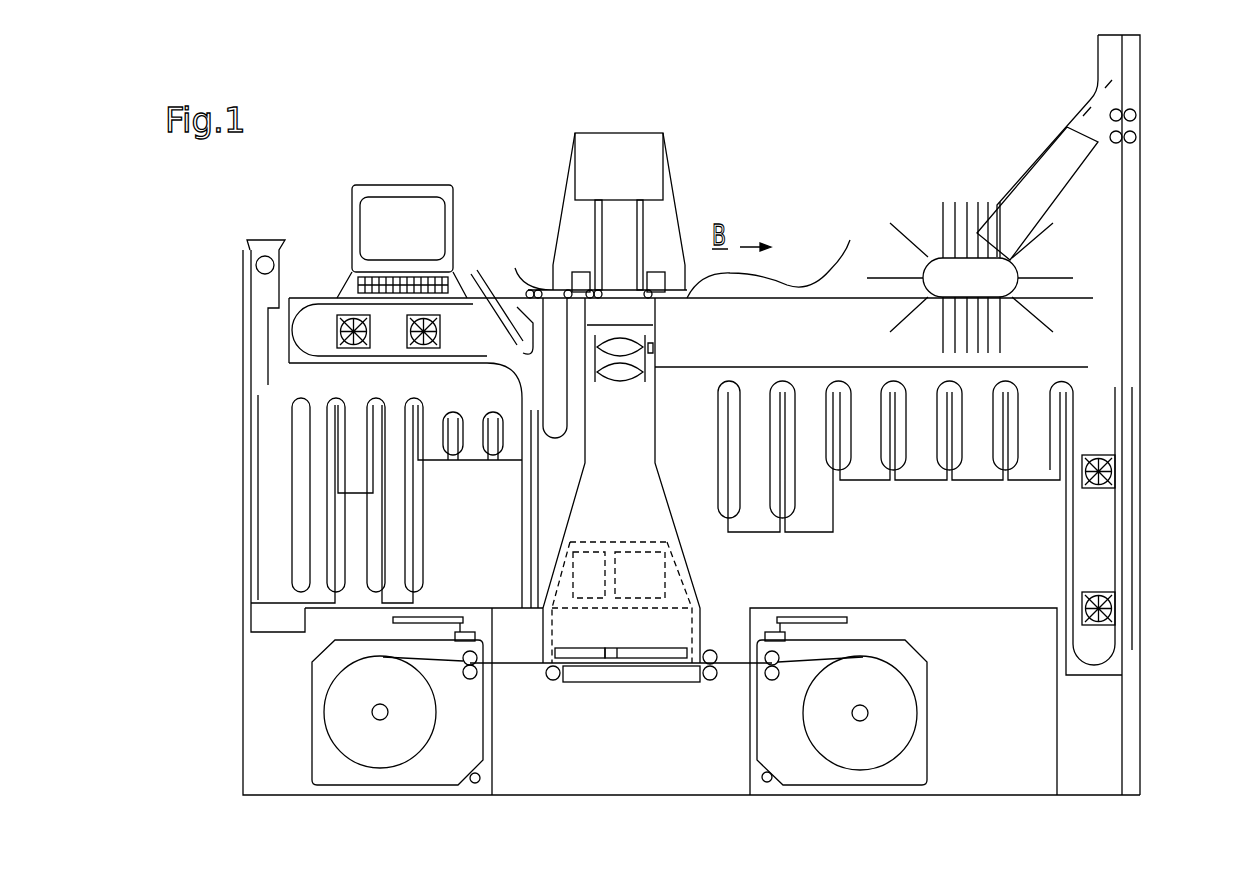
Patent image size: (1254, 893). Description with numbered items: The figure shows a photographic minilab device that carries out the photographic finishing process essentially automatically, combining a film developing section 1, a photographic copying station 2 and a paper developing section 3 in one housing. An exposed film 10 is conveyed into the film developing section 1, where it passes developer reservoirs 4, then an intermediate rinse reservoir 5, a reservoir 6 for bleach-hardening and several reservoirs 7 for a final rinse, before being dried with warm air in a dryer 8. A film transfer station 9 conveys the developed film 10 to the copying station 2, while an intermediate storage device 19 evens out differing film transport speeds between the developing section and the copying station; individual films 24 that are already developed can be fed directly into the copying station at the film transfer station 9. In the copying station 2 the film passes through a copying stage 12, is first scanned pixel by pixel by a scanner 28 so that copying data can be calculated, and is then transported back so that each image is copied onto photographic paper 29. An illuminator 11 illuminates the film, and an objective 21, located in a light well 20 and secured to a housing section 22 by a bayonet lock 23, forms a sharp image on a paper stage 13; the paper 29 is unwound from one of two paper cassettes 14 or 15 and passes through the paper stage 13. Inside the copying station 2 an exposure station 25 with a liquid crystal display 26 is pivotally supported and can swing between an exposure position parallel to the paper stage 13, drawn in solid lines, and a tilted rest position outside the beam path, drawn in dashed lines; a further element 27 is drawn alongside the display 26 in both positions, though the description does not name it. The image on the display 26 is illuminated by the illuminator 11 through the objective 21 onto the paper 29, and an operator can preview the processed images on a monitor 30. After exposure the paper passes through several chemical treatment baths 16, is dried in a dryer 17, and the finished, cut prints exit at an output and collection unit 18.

The film developing section 1 is at (238, 505).
The photographic copying station 2 is at (618, 798).
The paper developing section 3 is at (1150, 437).
The developer reservoirs 4 is at (297, 603).
The intermediate rinse reservoir 5 is at (358, 490).
The bleach-hardening reservoir 6 is at (405, 565).
The final rinse reservoirs 7 is at (530, 463).
The dryer 8 is at (335, 313).
The film transfer station 9 is at (495, 269).
The exposed film 10 is at (285, 396).
The illuminator 11 is at (657, 140).
The copying stage 12 is at (618, 300).
The paper stage 13 is at (625, 677).
The paper cassette 14 is at (415, 780).
The paper cassette 15 is at (808, 785).
The chemical treatment baths 16 is at (1060, 540).
The dryer 17 is at (1118, 560).
The output and collection unit 18 is at (960, 150).
The intermediate storage device 19 is at (553, 437).
The light well 20 is at (643, 497).
The objective 21 is at (655, 368).
The housing section 22 is at (657, 328).
The bayonet lock 23 is at (653, 353).
The individual films 24 is at (790, 290).
The exposure station 25 is at (543, 581).
The liquid crystal display 26 is at (660, 545).
The first module 27 is at (590, 553).
The scanner 28 is at (587, 275).
The photographic paper 29 is at (515, 664).
The monitor 30 is at (405, 210).